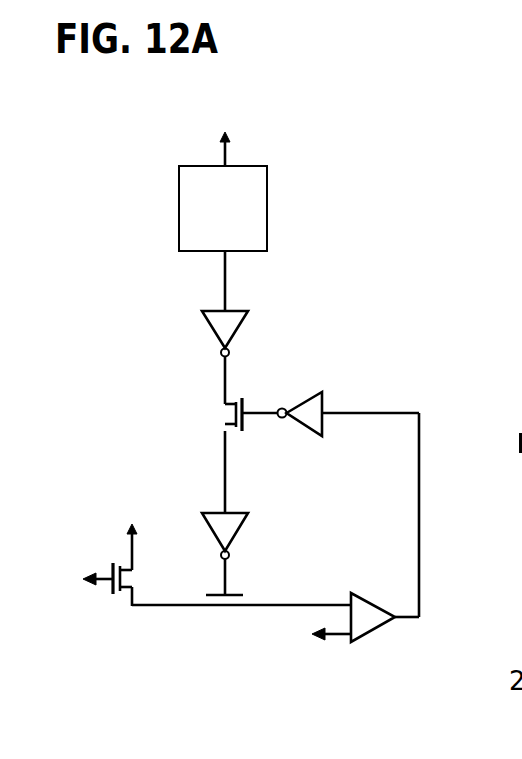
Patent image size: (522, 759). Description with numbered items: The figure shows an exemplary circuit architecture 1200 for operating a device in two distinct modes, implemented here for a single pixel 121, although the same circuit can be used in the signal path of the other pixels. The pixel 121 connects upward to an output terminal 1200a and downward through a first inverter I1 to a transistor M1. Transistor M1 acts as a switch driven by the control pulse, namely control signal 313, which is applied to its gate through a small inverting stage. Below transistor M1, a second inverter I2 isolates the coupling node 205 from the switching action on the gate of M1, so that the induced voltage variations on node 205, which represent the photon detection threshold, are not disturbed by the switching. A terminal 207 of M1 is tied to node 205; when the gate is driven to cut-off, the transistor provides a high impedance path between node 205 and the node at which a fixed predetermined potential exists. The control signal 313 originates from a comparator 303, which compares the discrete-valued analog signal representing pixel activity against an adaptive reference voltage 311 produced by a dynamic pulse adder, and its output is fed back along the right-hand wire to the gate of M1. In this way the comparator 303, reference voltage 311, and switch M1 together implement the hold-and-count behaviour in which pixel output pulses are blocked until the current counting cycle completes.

The circuit architecture 1200 is at (108, 112).
The output terminal 1200a is at (221, 120).
The pixel 121 is at (223, 208).
The inverter I1 is at (208, 330).
The transistor M1 is at (225, 414).
The control signal 313 is at (380, 411).
The inverter I2 is at (239, 532).
The coupling node 205 is at (225, 607).
The terminal of transistor M1 207 is at (131, 607).
The comparator 303 is at (388, 633).
The adaptive reference voltage 311 is at (318, 640).